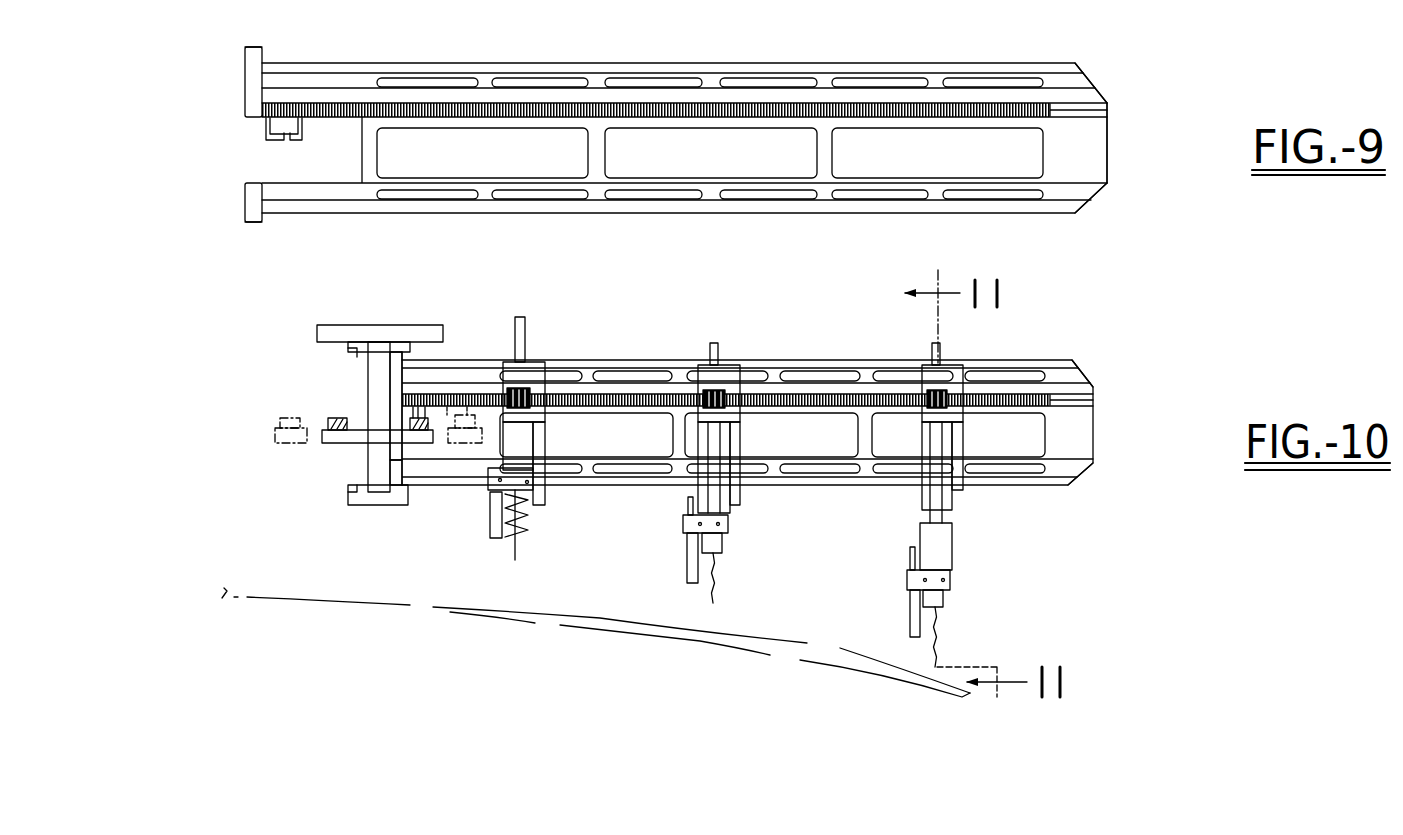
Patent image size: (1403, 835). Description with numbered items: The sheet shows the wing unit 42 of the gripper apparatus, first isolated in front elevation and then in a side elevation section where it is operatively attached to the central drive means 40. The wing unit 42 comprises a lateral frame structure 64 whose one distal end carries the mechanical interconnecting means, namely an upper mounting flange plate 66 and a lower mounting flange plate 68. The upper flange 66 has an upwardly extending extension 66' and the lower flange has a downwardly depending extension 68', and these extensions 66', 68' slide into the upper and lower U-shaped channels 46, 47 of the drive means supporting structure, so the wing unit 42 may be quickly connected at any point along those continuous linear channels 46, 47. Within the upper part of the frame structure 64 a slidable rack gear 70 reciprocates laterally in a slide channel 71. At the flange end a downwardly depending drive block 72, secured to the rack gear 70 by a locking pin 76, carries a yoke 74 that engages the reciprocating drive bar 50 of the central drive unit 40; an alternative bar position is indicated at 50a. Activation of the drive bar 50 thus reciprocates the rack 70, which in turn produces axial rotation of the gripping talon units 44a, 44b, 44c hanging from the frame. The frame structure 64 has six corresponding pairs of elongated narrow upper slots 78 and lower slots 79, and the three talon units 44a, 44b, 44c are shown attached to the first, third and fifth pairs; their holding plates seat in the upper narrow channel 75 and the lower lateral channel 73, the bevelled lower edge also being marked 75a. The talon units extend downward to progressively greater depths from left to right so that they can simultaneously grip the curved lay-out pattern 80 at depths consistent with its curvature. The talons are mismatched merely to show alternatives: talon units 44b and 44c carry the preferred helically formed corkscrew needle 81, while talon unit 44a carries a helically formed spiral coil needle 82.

In FIG. 10, the central drive means 40 is at (360, 322).
In FIG. 9, the wing unit 42 is at (850, 58).
In FIG. 10, the wing unit 42 is at (1050, 357).
In FIG. 10, the gripping talon unit 44a is at (538, 360).
In FIG. 10, the gripping talon unit 44b is at (701, 348).
In FIG. 10, the gripping talon unit 44c is at (922, 350).
In FIG. 10, the upper U-shaped channel 46 is at (348, 352).
In FIG. 10, the lower U-shaped channel 47 is at (350, 495).
In FIG. 10, the drive bar 50 is at (338, 417).
In FIG. 10, the alternate platform position 50a is at (282, 424).
In FIG. 9, the lateral frame structure 64 is at (1109, 105).
In FIG. 9, the upper mounting flange plate 66 is at (213, 82).
In FIG. 10, the upper mounting flange plate 66 is at (415, 373).
In FIG. 9, the upwardly extending extension 66' is at (213, 31).
In FIG. 9, the lower mounting flange plate 68 is at (213, 199).
In FIG. 10, the lower mounting flange plate 68 is at (422, 501).
In FIG. 9, the downwardly depending extension 68' is at (213, 230).
In FIG. 9, the slidable rack gear 70 is at (340, 102).
In FIG. 10, the slidable rack gear 70 is at (616, 394).
In FIG. 9, the slide channel 71 is at (1095, 115).
In FIG. 10, the slide channel 71 is at (1095, 403).
In FIG. 9, the drive block 72 is at (268, 125).
In FIG. 9, the lower lateral channel 73 is at (1088, 208).
In FIG. 9, the yoke 74 is at (291, 141).
In FIG. 9, the upper narrow channel 75 is at (1088, 68).
In FIG. 10, the upper narrow channel 75 is at (1088, 367).
In FIG. 10, the lower bevel 75a is at (1082, 479).
In FIG. 9, the locking pin 76 is at (273, 141).
In FIG. 9, the upper slots 78 is at (442, 80).
In FIG. 10, the upper slots 78 is at (637, 374).
In FIG. 9, the lower slots 79 is at (454, 194).
In FIG. 10, the lower slots 79 is at (620, 470).
In FIG. 10, the lay-out pattern 80 is at (778, 635).
In FIG. 10, the corkscrew needle 81 is at (716, 582).
In FIG. 10, the spiral coil needle 82 is at (517, 542).